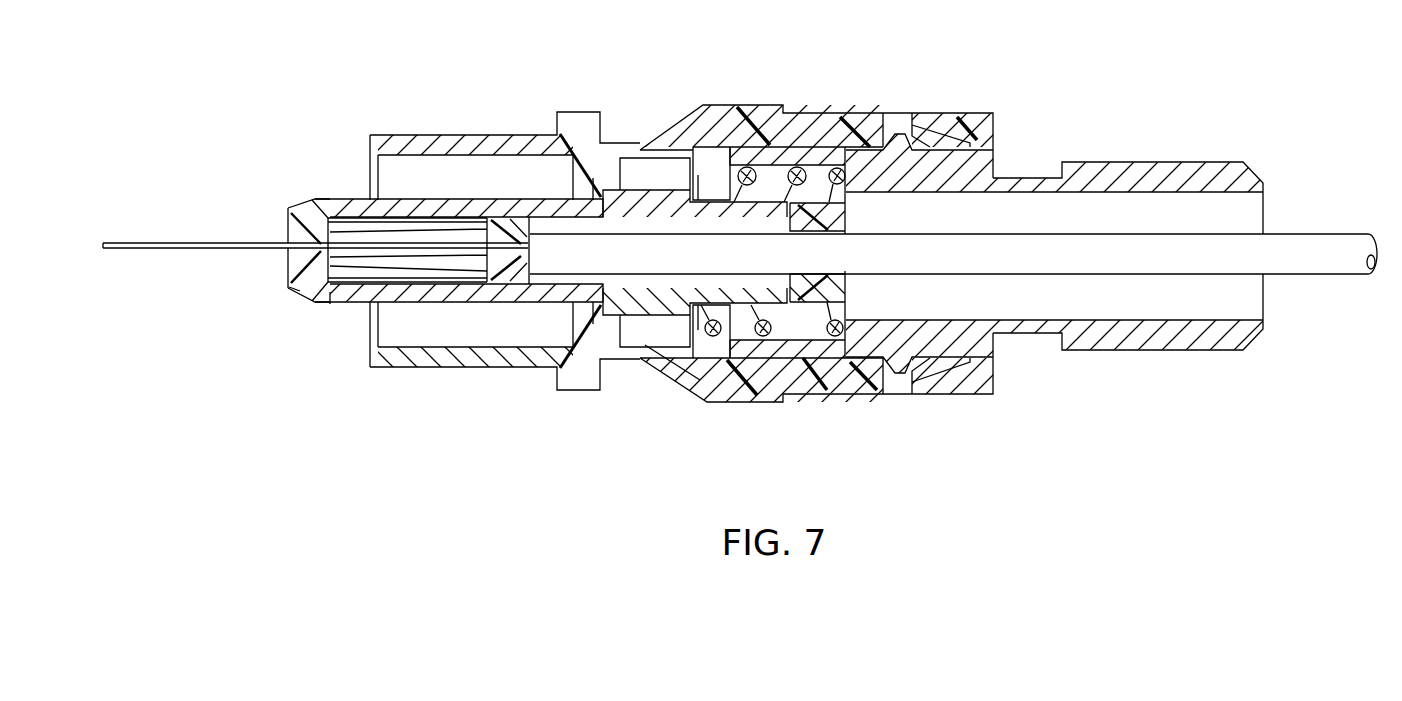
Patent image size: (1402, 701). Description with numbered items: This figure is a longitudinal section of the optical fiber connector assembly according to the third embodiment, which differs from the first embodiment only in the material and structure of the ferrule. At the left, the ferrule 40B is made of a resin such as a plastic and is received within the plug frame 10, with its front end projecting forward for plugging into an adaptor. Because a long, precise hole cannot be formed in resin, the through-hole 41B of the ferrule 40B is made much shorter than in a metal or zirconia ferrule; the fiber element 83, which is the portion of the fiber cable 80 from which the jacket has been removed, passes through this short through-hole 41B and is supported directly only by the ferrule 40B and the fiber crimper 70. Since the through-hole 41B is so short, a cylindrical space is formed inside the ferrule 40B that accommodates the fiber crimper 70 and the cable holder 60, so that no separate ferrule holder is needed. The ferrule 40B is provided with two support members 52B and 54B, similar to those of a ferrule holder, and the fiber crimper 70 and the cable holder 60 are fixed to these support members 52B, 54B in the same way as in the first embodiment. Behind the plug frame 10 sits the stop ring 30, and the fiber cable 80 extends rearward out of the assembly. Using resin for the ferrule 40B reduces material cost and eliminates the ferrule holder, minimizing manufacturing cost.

The plug frame 10 is at (826, 128).
The stop ring 30 is at (1199, 178).
The ferrule 40B is at (320, 203).
The through-hole 41B is at (290, 290).
The support member 52B is at (606, 200).
The support member 54B is at (353, 198).
The cable holder 60 is at (678, 302).
The fiber crimper 70 is at (428, 227).
The fiber cable 80 is at (1300, 231).
The fiber element 83 is at (330, 304).